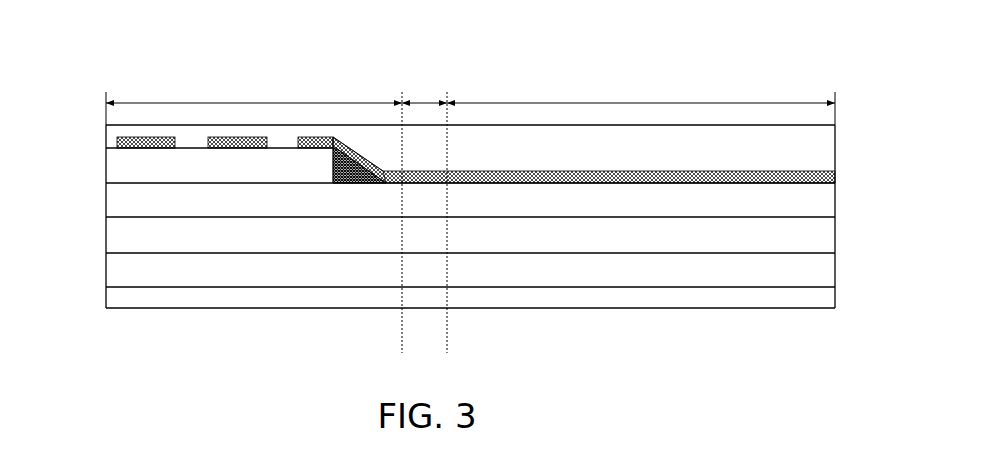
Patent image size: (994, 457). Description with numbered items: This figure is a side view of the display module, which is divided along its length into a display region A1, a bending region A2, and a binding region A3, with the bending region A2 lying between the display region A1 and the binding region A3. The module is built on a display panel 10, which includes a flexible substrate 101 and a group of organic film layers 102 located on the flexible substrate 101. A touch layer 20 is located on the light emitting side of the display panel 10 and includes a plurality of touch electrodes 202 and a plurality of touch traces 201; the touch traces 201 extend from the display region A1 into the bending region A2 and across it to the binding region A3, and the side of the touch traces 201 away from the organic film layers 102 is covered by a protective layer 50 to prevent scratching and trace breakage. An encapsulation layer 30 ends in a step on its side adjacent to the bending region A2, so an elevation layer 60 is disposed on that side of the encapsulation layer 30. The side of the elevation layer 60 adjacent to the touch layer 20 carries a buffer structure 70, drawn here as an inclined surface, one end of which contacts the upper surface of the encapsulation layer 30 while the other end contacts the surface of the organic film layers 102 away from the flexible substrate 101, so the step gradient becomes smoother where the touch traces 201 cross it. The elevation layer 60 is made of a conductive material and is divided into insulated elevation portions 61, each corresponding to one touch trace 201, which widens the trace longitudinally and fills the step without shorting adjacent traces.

The display panel 10 is at (527, 245).
The flexible substrate 101 is at (836, 307).
The group of organic film layers 102 is at (846, 192).
The touch layer 20 is at (225, 83).
The touch traces 201 is at (323, 138).
The touch electrodes 202 is at (168, 138).
The encapsulation layer 30 is at (100, 167).
The protective layer 50 is at (836, 152).
The elevation layer 60 is at (317, 254).
The elevation portions 61 is at (355, 183).
The buffer structure 70 is at (357, 154).
The display region A1 is at (254, 86).
The bending region A2 is at (424, 87).
The binding region A3 is at (641, 88).